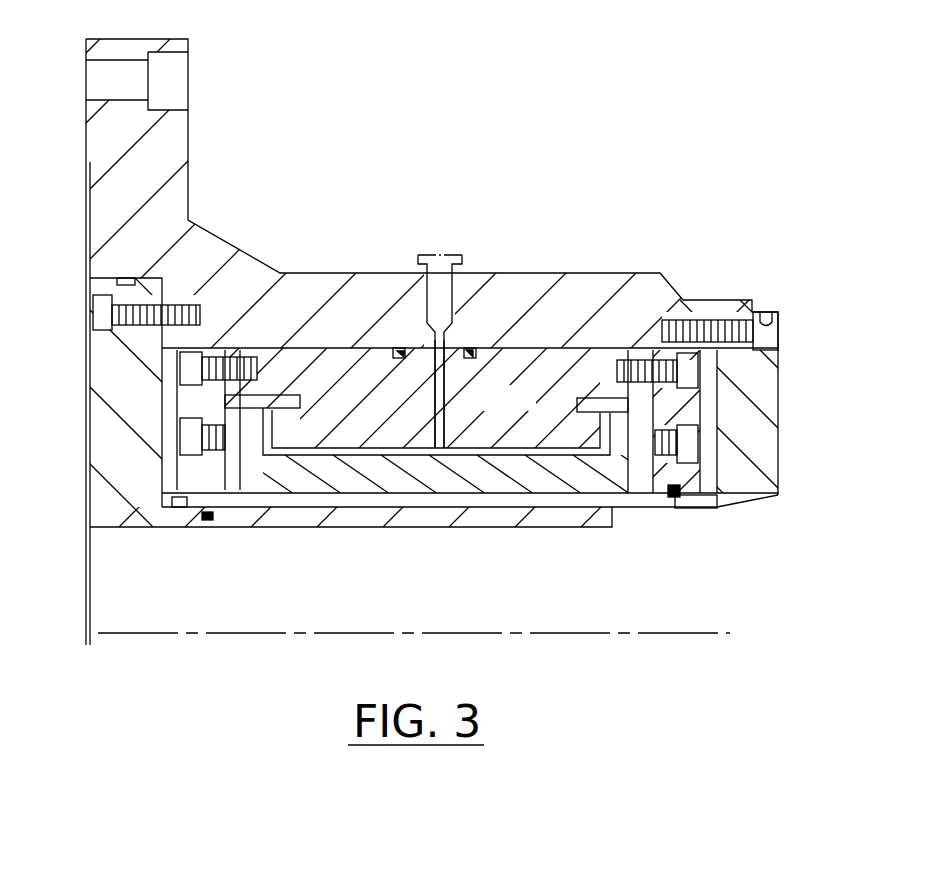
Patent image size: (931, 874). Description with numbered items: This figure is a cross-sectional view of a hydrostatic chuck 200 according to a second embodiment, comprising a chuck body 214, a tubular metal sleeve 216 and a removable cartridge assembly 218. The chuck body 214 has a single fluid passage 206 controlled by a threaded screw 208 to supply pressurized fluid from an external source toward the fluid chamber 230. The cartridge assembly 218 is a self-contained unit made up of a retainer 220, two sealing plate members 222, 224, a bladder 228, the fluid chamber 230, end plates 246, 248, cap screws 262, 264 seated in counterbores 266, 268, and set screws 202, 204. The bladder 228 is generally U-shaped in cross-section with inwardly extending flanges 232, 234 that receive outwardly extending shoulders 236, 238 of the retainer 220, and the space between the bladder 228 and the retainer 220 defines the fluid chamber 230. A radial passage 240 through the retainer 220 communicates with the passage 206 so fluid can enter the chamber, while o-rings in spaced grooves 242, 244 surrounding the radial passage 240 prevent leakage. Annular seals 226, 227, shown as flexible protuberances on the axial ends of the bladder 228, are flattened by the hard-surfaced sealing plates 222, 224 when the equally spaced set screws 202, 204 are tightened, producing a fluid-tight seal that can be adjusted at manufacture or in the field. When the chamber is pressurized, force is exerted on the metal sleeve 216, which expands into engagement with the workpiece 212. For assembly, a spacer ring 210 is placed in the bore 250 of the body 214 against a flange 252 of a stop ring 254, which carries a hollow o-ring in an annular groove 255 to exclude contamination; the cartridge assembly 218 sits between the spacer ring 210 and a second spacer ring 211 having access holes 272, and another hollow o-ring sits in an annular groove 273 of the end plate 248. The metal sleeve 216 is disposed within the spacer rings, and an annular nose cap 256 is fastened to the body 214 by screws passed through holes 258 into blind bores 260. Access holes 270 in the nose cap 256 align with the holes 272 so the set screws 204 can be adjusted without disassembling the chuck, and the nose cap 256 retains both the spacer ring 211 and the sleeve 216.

The hydrostatic chuck 200 is at (648, 150).
The set screws 202 is at (188, 435).
The set screws 204 is at (752, 462).
The fluid passage 206 is at (453, 327).
The threaded screw 208 is at (456, 286).
The spacer ring 210 is at (172, 500).
The second spacer ring 211 is at (693, 485).
The workpiece 212 is at (300, 522).
The chuck body 214 is at (538, 278).
The tubular metal sleeve 216 is at (356, 522).
The cartridge assembly 218 is at (546, 343).
The retainer 220 is at (487, 440).
The sealing plate member 222 is at (230, 510).
The sealing plate member 224 is at (645, 487).
The annular seal 226 is at (248, 418).
The annular seal 227 is at (657, 420).
The bladder 228 is at (598, 485).
The fluid chamber 230 is at (453, 455).
The inwardly extending flange 232 is at (282, 470).
The inwardly extending flange 234 is at (597, 400).
The outwardly extending shoulder 236 is at (262, 505).
The outwardly extending shoulder 238 is at (563, 433).
The radial passage 240 is at (435, 398).
The groove 242 is at (397, 356).
The groove 244 is at (468, 350).
The end plate 246 is at (187, 472).
The end plate 248 is at (712, 487).
The bore 250 is at (745, 348).
The flange 252 is at (92, 348).
The stop ring 254 is at (108, 476).
The annular groove 255 is at (197, 519).
The annular nose cap 256 is at (770, 410).
The holes 258 is at (760, 318).
The blind bores 260 is at (697, 335).
The cap screw 262 is at (187, 363).
The cap screw 264 is at (683, 378).
The counterbore 266 is at (220, 360).
The counterbore 268 is at (623, 365).
The access holes 270 is at (745, 465).
The access holes 272 is at (707, 433).
The annular groove 273 is at (673, 497).